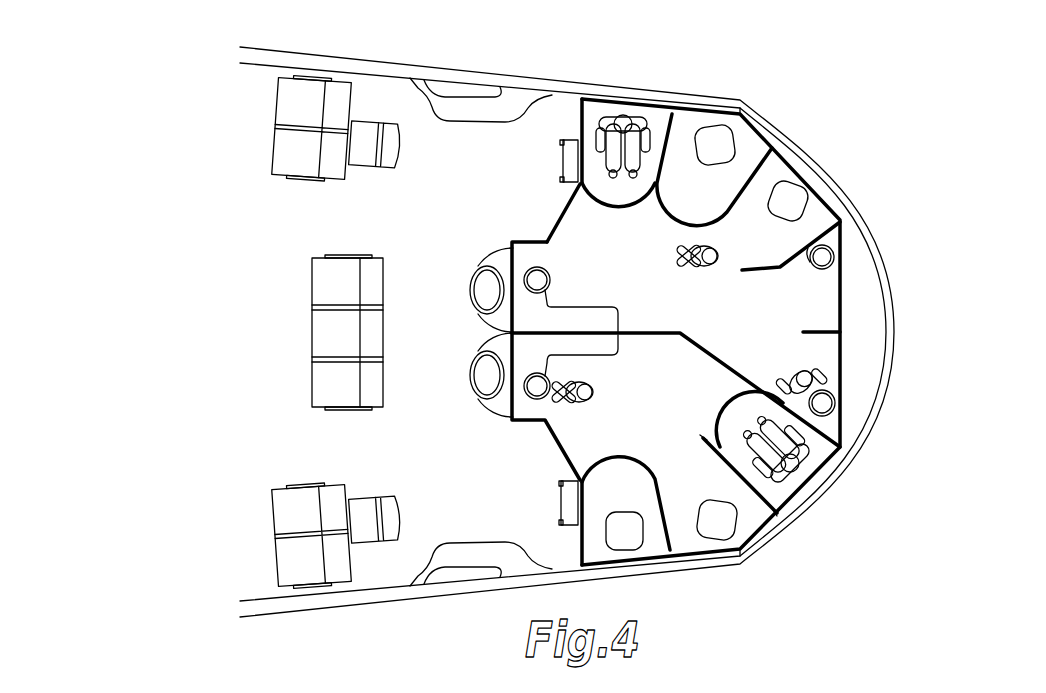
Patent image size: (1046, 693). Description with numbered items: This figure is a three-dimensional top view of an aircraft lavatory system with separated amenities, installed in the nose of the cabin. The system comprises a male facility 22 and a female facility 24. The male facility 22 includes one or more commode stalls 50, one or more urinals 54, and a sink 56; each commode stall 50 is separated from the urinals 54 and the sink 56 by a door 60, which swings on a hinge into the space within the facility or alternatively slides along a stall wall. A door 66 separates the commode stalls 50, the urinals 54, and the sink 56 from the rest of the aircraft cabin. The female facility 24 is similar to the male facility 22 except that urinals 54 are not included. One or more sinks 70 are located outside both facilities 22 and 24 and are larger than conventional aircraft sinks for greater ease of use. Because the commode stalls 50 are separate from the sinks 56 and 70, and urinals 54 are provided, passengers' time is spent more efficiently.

The male facility 22 is at (661, 291).
The female facility 24 is at (671, 408).
The commode stall 50 is at (593, 106).
The urinal 54 is at (824, 402).
The sink 56 is at (543, 280).
The door 60 is at (752, 272).
The door 66 is at (558, 212).
The sink 70 is at (482, 375).